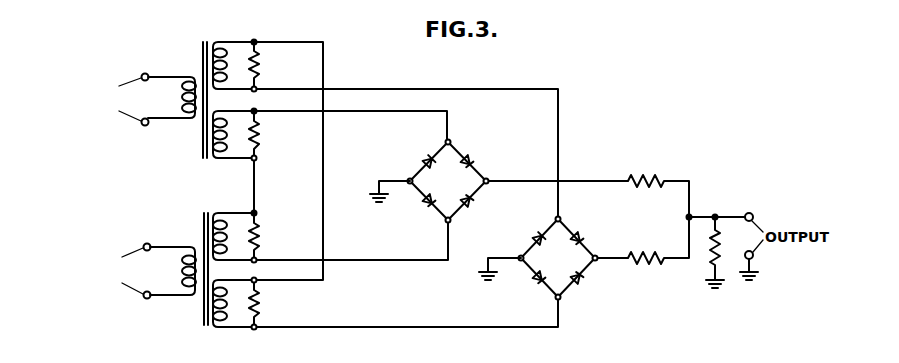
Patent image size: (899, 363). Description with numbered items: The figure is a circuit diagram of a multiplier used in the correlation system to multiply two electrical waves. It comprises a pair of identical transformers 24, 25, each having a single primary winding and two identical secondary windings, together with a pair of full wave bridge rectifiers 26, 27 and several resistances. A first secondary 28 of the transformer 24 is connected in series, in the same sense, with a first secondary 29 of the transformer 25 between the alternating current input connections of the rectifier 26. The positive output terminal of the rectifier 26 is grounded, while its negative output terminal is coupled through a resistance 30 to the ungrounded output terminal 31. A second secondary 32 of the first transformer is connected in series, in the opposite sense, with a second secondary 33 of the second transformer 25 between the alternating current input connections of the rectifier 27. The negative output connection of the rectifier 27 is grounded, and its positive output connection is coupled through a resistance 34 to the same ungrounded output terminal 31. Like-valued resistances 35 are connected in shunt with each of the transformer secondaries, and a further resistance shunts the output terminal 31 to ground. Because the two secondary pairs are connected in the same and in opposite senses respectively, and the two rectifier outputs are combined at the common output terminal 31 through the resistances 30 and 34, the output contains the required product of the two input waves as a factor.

The first input transformer 24 is at (192, 57).
The second input transformer 25 is at (199, 233).
The first rectifier bridge 26 is at (444, 142).
The second rectifier bridge 27 is at (554, 224).
The lower secondary winding of transformer 24 28 is at (221, 158).
The upper secondary winding of transformer 25 29 is at (222, 214).
The summing resistor 30 is at (645, 173).
The output terminal 31 is at (748, 213).
The upper secondary winding of transformer 24 32 is at (220, 43).
The lower secondary winding of transformer 25 33 is at (223, 327).
The summing resistor 34 is at (658, 266).
The load resistor 35 is at (258, 65).